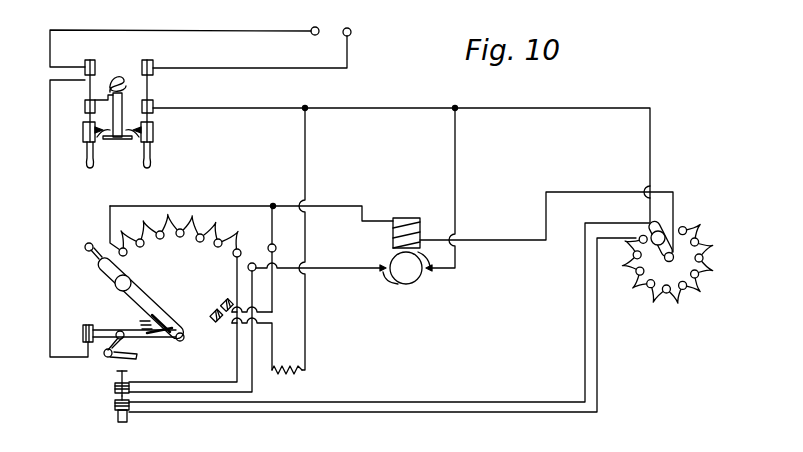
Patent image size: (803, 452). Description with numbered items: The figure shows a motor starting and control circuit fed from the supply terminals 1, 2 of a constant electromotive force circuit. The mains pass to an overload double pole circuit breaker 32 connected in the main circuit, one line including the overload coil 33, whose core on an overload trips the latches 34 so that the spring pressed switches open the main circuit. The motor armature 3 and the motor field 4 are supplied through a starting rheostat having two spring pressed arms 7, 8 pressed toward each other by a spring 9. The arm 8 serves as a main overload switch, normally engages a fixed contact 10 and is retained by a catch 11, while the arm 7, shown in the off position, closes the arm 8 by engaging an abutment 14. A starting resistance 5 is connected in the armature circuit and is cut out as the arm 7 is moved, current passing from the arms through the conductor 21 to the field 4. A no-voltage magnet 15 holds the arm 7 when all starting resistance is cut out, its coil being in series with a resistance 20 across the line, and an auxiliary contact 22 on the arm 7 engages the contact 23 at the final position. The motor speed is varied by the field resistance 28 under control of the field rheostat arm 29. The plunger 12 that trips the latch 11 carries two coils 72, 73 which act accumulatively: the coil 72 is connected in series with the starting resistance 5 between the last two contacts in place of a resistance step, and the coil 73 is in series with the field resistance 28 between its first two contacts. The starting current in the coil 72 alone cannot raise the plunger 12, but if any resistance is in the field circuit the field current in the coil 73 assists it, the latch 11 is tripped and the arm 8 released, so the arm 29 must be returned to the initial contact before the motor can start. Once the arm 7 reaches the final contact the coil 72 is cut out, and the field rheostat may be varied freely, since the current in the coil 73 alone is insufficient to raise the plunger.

The supply terminal 1 is at (313, 21).
The supply terminal 2 is at (353, 23).
The motor armature 3 is at (406, 268).
The motor field 4 is at (418, 202).
The starting resistance 5 is at (180, 239).
The starting rheostat arm 7 is at (148, 295).
The main overload switch arm 8 is at (138, 340).
The spring 9 is at (166, 339).
The fixed contact 10 is at (79, 323).
The catch 11 is at (106, 355).
The plunger 12 is at (120, 422).
The abutment 14 is at (142, 322).
The no-voltage magnet 15 is at (216, 306).
The resistance 20 is at (287, 382).
The conductor 21 is at (200, 206).
The auxiliary contact 22 is at (87, 245).
The contact 23 is at (268, 246).
The field resistance 28 is at (667, 269).
The field rheostat arm 29 is at (660, 250).
The double pole circuit breaker 32 is at (130, 114).
The overload coil 33 is at (118, 82).
The latches 34 is at (83, 140).
The coil 72 is at (115, 388).
The coil 73 is at (115, 405).